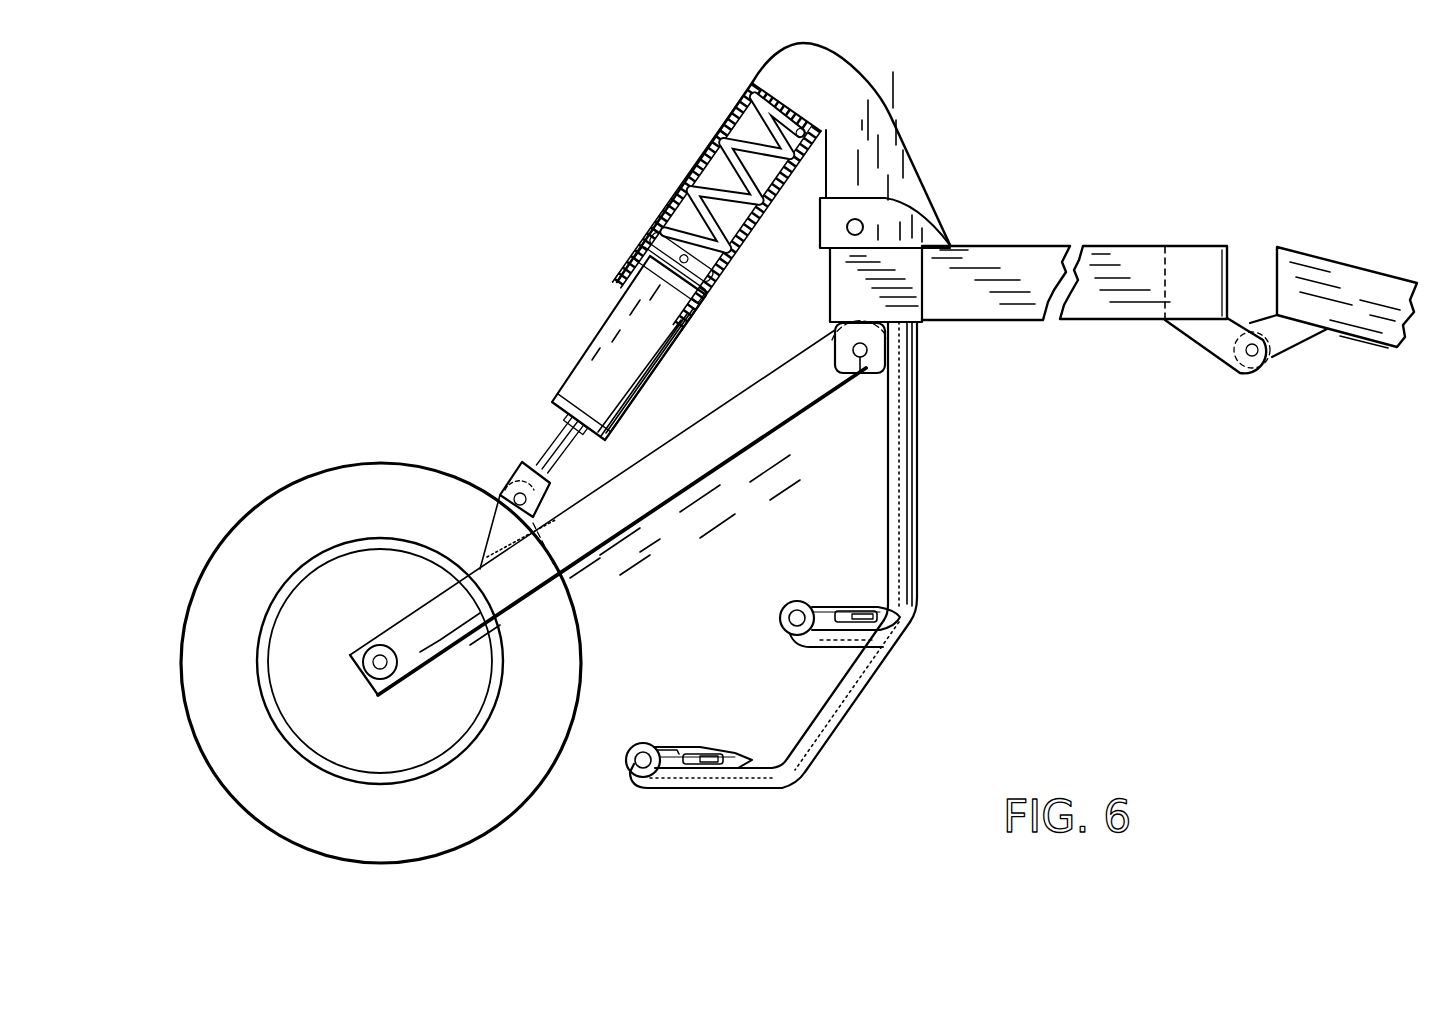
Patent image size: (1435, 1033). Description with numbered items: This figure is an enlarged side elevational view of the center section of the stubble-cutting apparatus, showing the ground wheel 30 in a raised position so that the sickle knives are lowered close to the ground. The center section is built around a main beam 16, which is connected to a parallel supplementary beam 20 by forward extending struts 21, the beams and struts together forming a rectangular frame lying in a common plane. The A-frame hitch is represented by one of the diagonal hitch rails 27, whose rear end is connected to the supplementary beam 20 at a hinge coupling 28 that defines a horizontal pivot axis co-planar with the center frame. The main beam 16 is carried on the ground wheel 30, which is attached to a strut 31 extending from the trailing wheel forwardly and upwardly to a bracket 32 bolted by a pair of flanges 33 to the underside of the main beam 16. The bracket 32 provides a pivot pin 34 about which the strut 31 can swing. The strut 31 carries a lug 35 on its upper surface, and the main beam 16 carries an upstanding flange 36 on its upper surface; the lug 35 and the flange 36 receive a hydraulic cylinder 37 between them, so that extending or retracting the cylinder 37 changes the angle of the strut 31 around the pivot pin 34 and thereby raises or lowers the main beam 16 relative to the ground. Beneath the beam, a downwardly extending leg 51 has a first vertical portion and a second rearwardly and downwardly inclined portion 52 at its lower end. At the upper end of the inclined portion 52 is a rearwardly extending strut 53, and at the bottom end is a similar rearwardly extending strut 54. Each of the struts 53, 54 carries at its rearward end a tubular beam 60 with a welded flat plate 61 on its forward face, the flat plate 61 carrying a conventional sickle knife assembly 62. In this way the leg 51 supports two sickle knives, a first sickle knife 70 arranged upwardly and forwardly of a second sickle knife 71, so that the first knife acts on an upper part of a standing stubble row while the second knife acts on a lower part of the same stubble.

The main beam 16 is at (835, 285).
The supplementary beam 20 is at (1188, 262).
The forward extending struts 21 is at (1034, 245).
The diagonal hitch rails 27 is at (1328, 255).
The hinge coupling 28 is at (1238, 372).
The ground wheel 30 is at (305, 468).
The strut 31 is at (655, 495).
The bracket 32 is at (832, 340).
The flanges 33 is at (838, 360).
The pivot pin 34 is at (860, 360).
The lug 35 is at (497, 540).
The upstanding flange 36 is at (890, 140).
The hydraulic cylinder 37 is at (575, 348).
The downwardly extending legs 51 is at (922, 492).
The inclined portion 52 is at (848, 710).
The rearwardly extending strut 53 is at (830, 648).
The rearwardly extending strut 54 is at (730, 783).
The tubular beam 60 is at (777, 627).
The flat plate 61 is at (668, 750).
The sickle knife assembly 62 is at (838, 612).
The first sickle knife 70 is at (857, 592).
The second sickle knife 71 is at (742, 747).